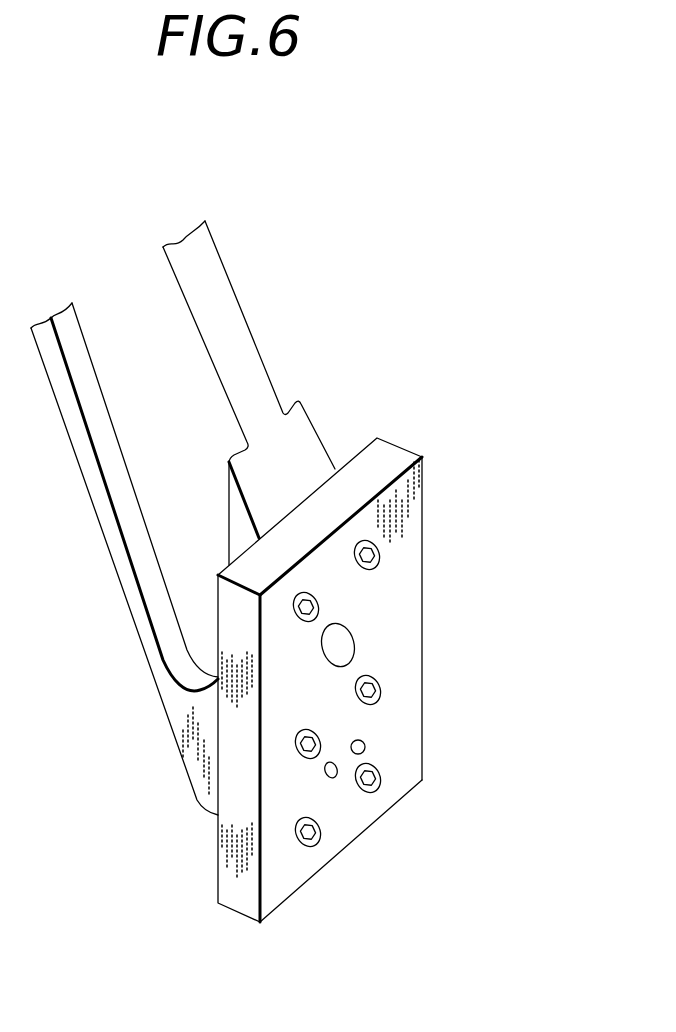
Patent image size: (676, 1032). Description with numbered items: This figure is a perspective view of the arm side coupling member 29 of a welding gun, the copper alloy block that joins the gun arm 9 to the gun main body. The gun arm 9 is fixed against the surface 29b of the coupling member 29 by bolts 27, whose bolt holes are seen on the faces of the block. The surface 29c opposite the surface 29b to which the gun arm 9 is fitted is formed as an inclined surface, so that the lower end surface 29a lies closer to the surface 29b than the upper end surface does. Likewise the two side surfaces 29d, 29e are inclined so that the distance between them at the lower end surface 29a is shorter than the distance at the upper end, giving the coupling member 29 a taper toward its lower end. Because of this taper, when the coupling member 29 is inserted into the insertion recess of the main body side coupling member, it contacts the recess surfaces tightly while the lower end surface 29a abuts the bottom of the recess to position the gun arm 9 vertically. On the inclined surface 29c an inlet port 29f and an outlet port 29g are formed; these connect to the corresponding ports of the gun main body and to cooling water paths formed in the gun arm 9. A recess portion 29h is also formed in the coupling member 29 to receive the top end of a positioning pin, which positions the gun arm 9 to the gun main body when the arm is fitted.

The gun arm 9 is at (238, 343).
The bolts 27 is at (378, 548).
The arm side coupling member 29 is at (332, 642).
The lower end surface 29a is at (343, 853).
The surface to which the gun arm is fitted 29b is at (333, 474).
The inclined surface 29c is at (400, 627).
The side surface 29d is at (422, 580).
The side surface 29e is at (242, 835).
The inlet port 29f is at (365, 745).
The outlet port 29g is at (335, 780).
The recess portion 29h is at (355, 643).